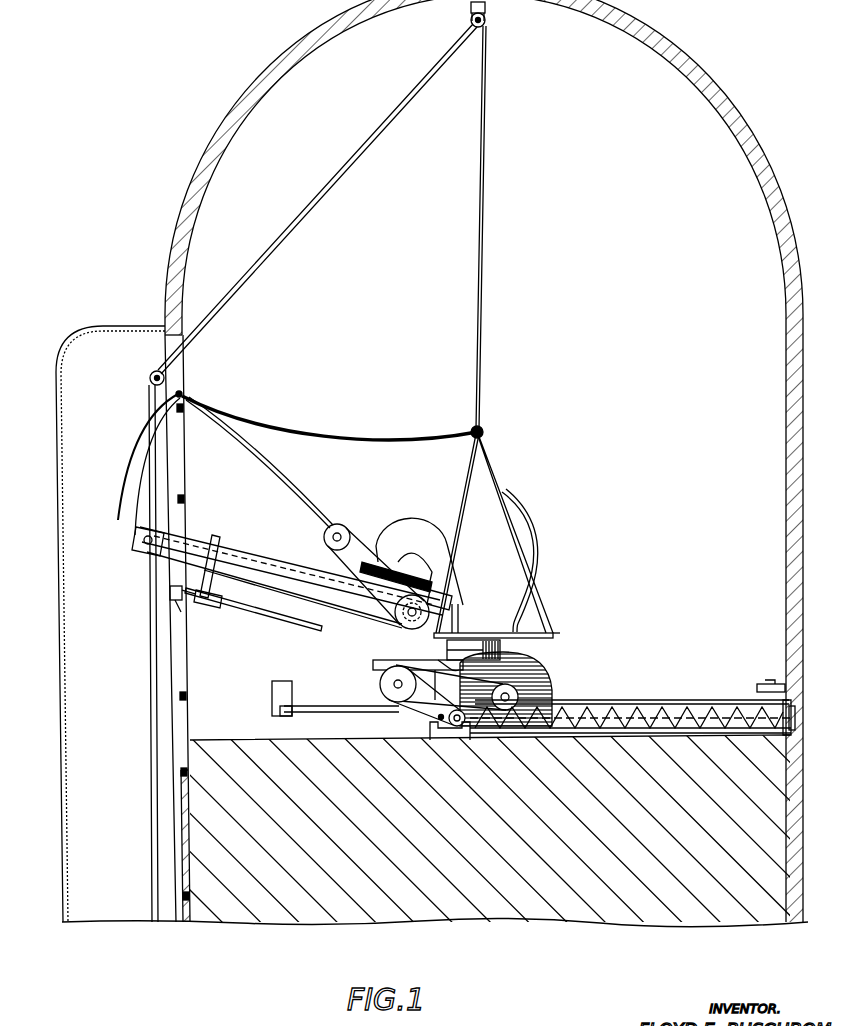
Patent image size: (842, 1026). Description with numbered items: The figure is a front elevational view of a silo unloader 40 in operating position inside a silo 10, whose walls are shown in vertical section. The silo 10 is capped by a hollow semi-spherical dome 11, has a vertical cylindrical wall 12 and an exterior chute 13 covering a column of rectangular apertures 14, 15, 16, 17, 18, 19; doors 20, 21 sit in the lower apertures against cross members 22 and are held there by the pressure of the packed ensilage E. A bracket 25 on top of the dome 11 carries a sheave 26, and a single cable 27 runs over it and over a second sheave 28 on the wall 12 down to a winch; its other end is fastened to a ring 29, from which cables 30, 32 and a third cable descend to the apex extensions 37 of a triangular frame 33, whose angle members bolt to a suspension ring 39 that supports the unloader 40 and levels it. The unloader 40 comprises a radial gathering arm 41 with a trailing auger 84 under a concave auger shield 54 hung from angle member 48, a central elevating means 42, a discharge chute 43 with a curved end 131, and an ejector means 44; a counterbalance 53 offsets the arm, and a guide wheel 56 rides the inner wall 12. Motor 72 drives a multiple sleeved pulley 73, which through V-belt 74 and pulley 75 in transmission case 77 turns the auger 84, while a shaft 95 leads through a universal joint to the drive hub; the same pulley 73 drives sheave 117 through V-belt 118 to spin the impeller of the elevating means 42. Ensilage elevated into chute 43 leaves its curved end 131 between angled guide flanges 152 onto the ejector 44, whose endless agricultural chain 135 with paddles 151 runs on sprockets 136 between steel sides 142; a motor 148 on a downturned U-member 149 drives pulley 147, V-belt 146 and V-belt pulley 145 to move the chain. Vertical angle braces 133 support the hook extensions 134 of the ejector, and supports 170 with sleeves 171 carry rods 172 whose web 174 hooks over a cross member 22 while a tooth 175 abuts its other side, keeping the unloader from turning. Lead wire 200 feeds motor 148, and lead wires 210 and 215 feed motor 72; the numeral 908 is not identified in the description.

The silo 10 is at (704, 72).
The dome 11 is at (249, 98).
The cylindrical wall 12 is at (786, 379).
The exterior chute 13 is at (57, 475).
The aperture 14 is at (185, 372).
The aperture 15 is at (187, 451).
The aperture 16 is at (188, 507).
The aperture 17 is at (188, 654).
The aperture 18 is at (176, 754).
The aperture 19 is at (178, 855).
The door 20 is at (190, 738).
The door 21 is at (190, 851).
The cross members 22 is at (183, 396).
The bracket 25 is at (498, 13).
The sheave 26 is at (473, 37).
The cable 27 is at (487, 135).
The sheave 28 is at (150, 380).
The ring 29 is at (485, 430).
The cable 30 is at (468, 471).
The cable 32 is at (506, 483).
The triangular frame 33 is at (521, 633).
The apex extensions 37 is at (558, 636).
The suspension ring 39 is at (480, 638).
The silo unloader 40 is at (557, 577).
The gathering arm 41 is at (694, 695).
The elevating means 42 is at (533, 675).
The discharge chute 43 is at (430, 525).
The ejector means 44 is at (281, 529).
The angle member 48 is at (333, 714).
The counterbalance 53 is at (272, 696).
The auger shield 54 is at (655, 717).
The guide wheel 56 is at (772, 684).
The motor 72 is at (388, 672).
The multiple sleeved pulley 73 is at (394, 685).
The V-belt 74 is at (403, 705).
The pulley 75 is at (460, 727).
The transmission case 77 is at (432, 730).
The trailing auger 84 is at (599, 737).
The shaft 95 is at (442, 722).
The sheave 117 is at (519, 695).
The V-belt 118 is at (464, 684).
The curved end 131 is at (398, 523).
The vertical angle brace 133 is at (463, 625).
The hook extensions 134 is at (449, 599).
The endless flat agricultural chain 135 is at (331, 581).
The sprockets 136 is at (135, 538).
The sides 142 is at (293, 567).
The V-belt pulley 145 is at (401, 625).
The V-belt 146 is at (389, 561).
The pulley 147 is at (337, 524).
The motor 148 is at (345, 526).
The downturned U-member 149 is at (321, 557).
The paddles 151 is at (249, 546).
The angled guide flanges 152 is at (408, 571).
The supports 170 is at (219, 571).
The sleeve 171 is at (208, 603).
The rod 172 is at (294, 623).
The web 174 is at (170, 593).
The tooth 175 is at (180, 605).
The lead wire 200 is at (276, 459).
The lead wire 210 is at (533, 534).
The lead wire 215 is at (450, 661).
The end bracket 908 is at (797, 713).
The ensilage E is at (326, 891).